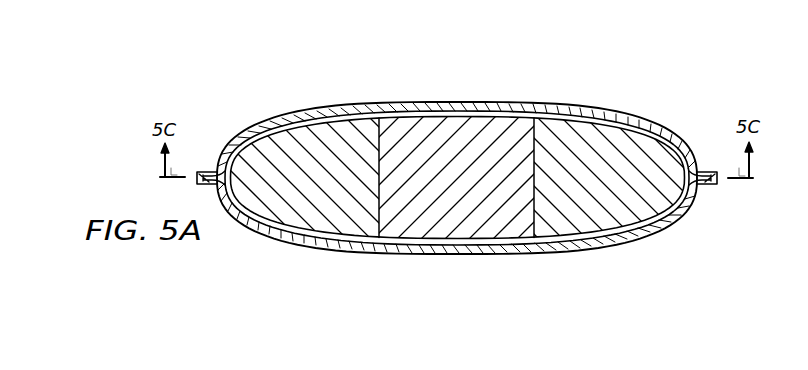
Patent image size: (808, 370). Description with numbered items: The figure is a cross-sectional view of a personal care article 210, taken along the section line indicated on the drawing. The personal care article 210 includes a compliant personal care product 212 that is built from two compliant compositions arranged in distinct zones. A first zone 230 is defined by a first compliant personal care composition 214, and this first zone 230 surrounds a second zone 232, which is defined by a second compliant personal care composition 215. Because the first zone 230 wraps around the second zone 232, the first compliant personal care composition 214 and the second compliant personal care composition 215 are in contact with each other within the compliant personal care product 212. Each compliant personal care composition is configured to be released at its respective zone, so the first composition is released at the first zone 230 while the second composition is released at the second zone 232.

The personal care article 210 is at (199, 96).
The compliant personal care product 212 is at (293, 158).
The second zone 232 is at (461, 147).
The first zone 230 is at (619, 158).
The first compliant personal care composition 214 is at (318, 222).
The second compliant personal care composition 215 is at (451, 230).